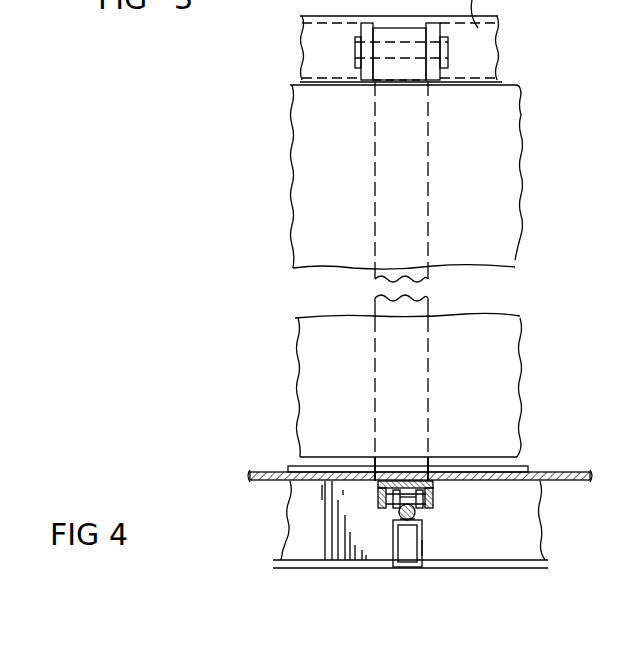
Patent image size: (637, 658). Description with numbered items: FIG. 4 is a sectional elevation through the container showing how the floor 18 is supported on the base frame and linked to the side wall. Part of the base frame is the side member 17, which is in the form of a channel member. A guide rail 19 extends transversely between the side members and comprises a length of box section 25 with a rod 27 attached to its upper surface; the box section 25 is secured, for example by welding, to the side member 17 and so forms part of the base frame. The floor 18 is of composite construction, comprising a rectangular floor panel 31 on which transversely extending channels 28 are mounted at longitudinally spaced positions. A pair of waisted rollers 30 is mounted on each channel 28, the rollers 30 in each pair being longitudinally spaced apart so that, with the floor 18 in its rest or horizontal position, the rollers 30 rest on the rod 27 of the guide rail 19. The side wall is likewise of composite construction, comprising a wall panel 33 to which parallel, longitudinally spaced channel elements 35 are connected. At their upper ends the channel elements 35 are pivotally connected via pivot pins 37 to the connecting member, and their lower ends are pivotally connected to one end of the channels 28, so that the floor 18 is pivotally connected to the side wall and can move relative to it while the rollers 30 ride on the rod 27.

The side member 17 is at (340, 566).
The floor 18 is at (262, 462).
The guide rail 19 is at (443, 548).
The box section 25 is at (422, 552).
The rod 27 is at (397, 518).
The channel 28 is at (433, 497).
The waisted roller 30 is at (420, 517).
The floor panel 31 is at (553, 474).
The wall panel 33 is at (500, 215).
The channel element 35 is at (415, 187).
The pivot pin 37 is at (447, 52).